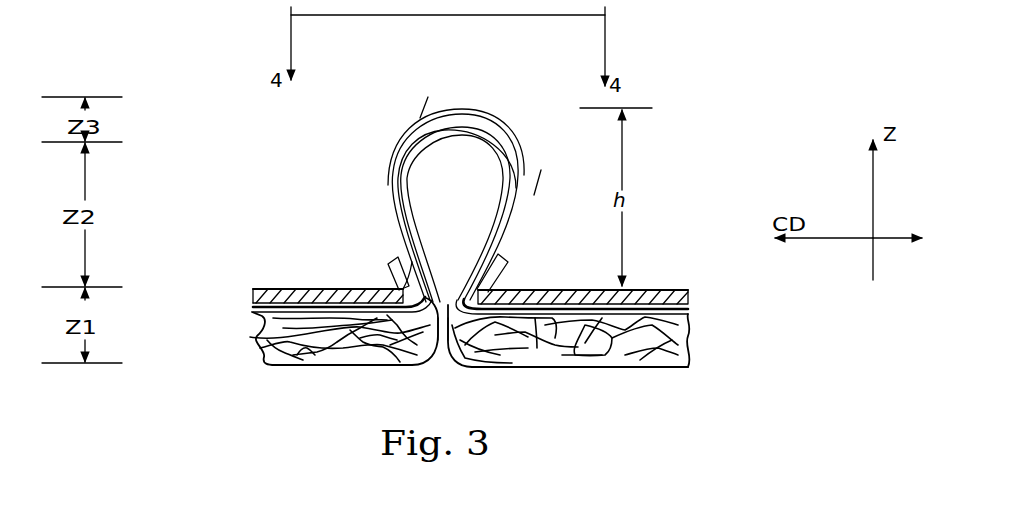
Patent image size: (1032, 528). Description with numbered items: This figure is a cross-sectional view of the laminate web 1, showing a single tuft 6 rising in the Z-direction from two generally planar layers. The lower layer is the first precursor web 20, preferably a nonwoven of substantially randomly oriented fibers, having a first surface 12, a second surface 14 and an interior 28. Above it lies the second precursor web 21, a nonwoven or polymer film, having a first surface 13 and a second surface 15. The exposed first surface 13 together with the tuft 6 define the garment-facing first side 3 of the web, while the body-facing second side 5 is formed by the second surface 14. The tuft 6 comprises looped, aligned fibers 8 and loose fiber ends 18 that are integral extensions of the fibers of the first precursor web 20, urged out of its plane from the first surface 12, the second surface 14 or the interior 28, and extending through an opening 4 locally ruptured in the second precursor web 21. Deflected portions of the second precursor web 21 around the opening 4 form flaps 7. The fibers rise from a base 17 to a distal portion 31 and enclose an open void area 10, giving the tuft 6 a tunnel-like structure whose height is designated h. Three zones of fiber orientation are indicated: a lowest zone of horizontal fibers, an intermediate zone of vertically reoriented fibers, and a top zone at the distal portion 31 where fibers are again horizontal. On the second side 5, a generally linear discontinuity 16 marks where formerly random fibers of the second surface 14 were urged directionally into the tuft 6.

The laminate web 1 is at (660, 62).
The first side 3 is at (639, 288).
The opening 4 is at (488, 284).
The second side 5 is at (587, 368).
The tuft 6 is at (500, 117).
The flap 7 is at (395, 273).
The looped, aligned fibers 8 is at (392, 158).
The void area 10 is at (437, 215).
The first surface of first precursor web 12 is at (302, 313).
The first surface of second precursor web 13 is at (307, 288).
The second surface of first precursor web 14 is at (346, 345).
The second surface of second precursor web 15 is at (338, 307).
The discontinuity 16 is at (434, 366).
The base 17 is at (392, 248).
The loose fiber ends 18 is at (425, 101).
The first precursor web 20 is at (272, 330).
The second precursor web 21 is at (254, 291).
The interior of first precursor web 28 is at (270, 343).
The distal portion 31 is at (462, 109).